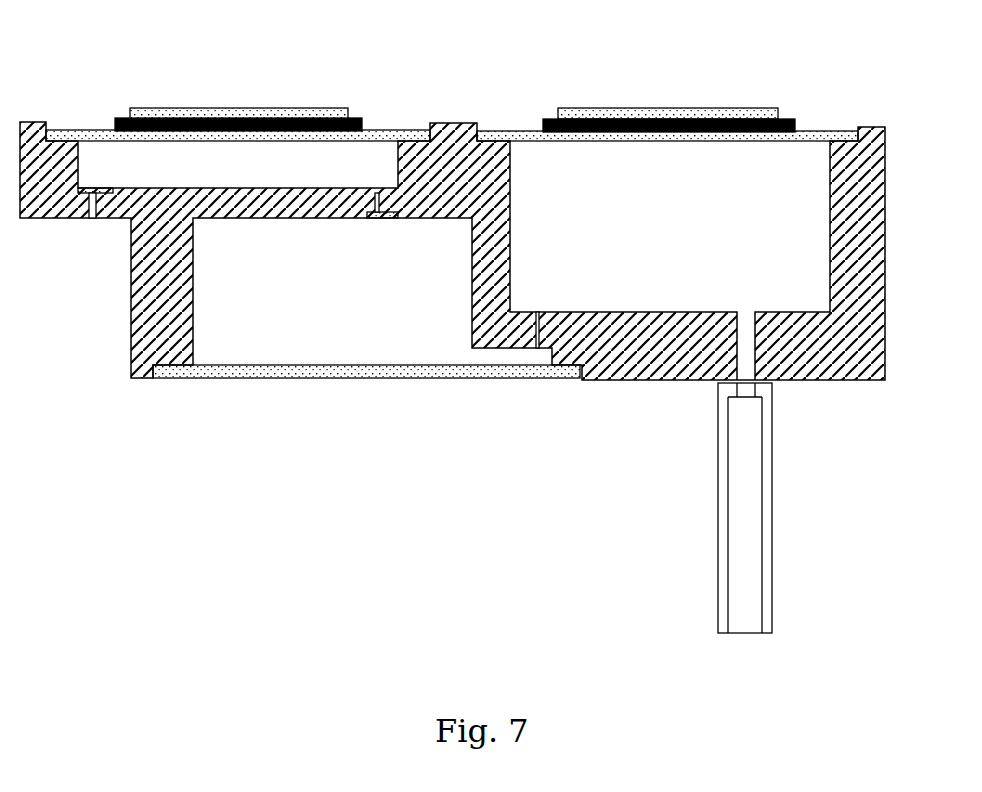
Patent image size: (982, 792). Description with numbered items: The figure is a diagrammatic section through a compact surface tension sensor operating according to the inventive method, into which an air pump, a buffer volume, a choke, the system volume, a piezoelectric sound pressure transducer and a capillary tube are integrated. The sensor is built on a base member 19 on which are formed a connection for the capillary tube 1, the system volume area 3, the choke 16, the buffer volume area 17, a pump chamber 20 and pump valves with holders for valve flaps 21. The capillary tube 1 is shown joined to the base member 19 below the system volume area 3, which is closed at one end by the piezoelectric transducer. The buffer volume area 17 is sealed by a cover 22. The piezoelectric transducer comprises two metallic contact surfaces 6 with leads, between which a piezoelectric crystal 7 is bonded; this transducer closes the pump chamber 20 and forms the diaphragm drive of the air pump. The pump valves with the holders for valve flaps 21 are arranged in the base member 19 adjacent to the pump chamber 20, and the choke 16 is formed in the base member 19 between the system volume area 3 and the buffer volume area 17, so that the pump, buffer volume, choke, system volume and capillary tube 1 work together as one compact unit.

The capillary tube 1 is at (767, 557).
The system volume area 3 is at (670, 226).
The metallic contact surfaces 6 is at (348, 110).
The piezoelectric crystal 7 is at (118, 117).
The choke 16 is at (535, 347).
The buffer volume area 17 is at (332, 291).
The base member 19 is at (152, 302).
The pump chamber 20 is at (238, 164).
The holders for valve flaps 21 is at (352, 218).
The cover 22 is at (340, 372).